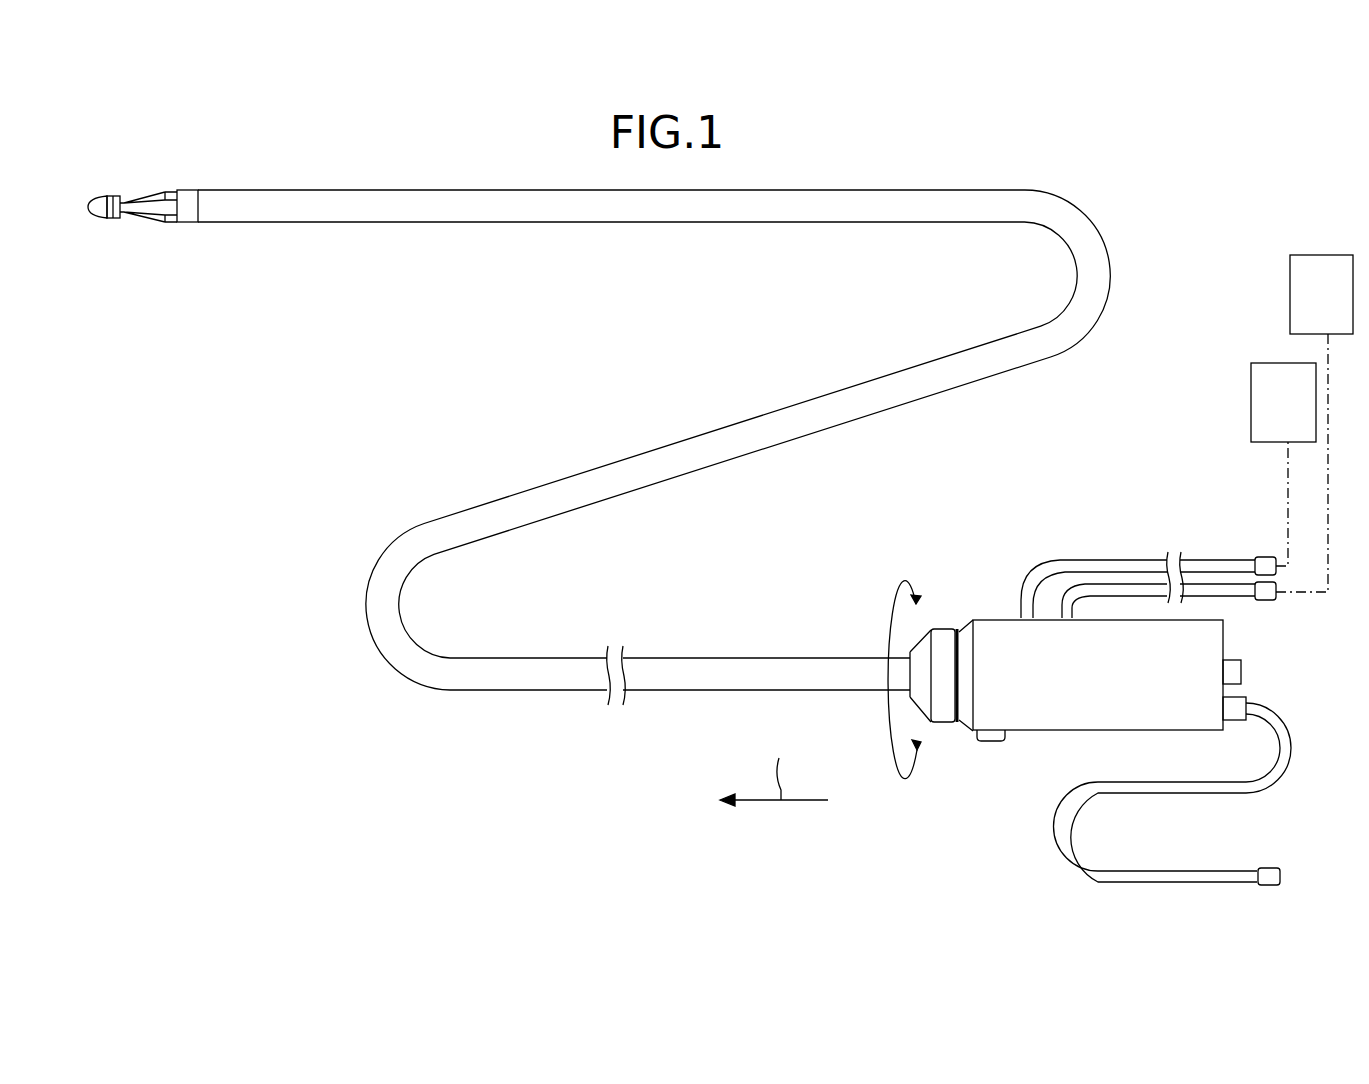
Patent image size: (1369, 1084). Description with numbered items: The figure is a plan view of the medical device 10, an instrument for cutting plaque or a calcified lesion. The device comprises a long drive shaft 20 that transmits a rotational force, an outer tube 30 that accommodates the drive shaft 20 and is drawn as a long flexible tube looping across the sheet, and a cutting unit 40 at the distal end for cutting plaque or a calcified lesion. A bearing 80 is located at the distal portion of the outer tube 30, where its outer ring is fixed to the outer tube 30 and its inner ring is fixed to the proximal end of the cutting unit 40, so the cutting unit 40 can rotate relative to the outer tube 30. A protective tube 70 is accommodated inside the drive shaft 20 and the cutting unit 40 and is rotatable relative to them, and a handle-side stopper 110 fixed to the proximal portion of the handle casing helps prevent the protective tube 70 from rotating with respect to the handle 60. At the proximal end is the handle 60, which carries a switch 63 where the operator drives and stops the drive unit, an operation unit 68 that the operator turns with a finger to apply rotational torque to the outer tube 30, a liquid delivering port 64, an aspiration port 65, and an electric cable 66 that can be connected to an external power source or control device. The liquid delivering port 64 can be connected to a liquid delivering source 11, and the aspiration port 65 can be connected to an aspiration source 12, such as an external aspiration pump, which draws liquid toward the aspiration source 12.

The medical device 10 is at (49, 169).
The liquid delivering source 11 is at (1321, 285).
The aspiration source 12 is at (1275, 382).
The drive shaft 20 is at (790, 658).
The outer tube 30 is at (664, 692).
The cutting unit 40 is at (127, 198).
The handle 60 is at (975, 563).
The switch 63 is at (993, 742).
The liquid delivering port 64 is at (1110, 590).
The aspiration port 65 is at (1050, 578).
The electric cable 66 is at (1172, 868).
The operation unit 68 is at (941, 630).
The protective tube 70 is at (1243, 672).
The bearing 80 is at (187, 215).
The handle-side stopper 110 is at (1230, 672).